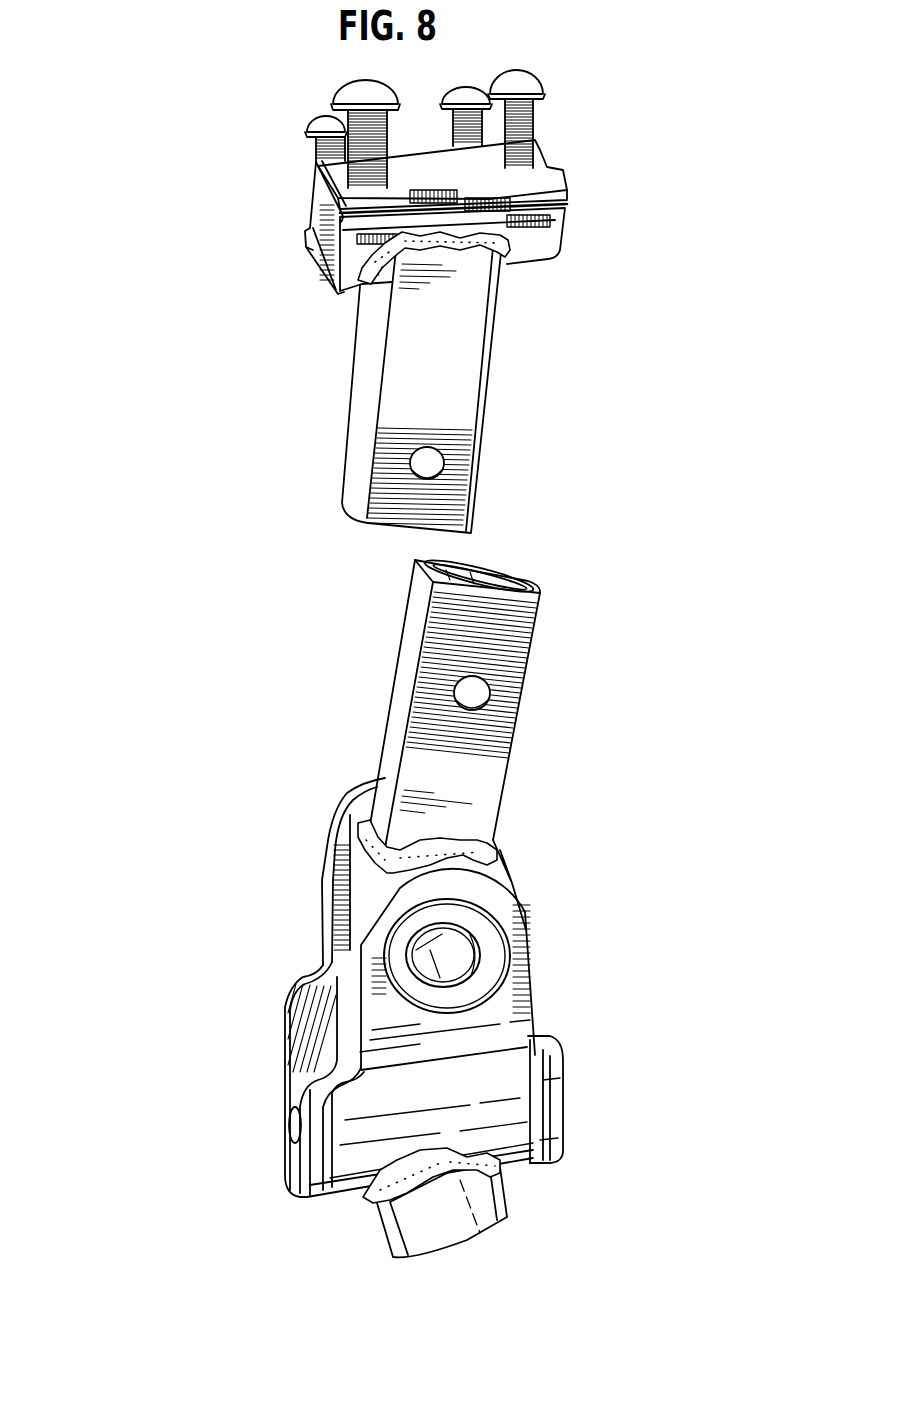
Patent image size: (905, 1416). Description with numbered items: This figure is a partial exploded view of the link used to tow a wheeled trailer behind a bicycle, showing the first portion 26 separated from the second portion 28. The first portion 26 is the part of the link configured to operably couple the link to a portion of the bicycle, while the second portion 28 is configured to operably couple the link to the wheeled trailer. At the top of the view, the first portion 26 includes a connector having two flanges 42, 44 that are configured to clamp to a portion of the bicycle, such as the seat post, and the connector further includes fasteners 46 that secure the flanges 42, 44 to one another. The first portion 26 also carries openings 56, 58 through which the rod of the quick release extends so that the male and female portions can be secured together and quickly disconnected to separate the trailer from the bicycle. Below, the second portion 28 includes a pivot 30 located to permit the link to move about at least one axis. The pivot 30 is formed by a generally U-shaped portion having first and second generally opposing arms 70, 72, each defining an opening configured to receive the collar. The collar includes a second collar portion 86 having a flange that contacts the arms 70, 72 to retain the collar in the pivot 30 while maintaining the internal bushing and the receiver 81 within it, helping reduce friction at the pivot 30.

The first portion 26 is at (179, 352).
The second portion 28 is at (230, 1157).
The pivot 30 is at (220, 992).
The flange 42 is at (323, 268).
The flange 44 is at (312, 202).
The fasteners 46 is at (308, 121).
The opening 56 is at (462, 693).
The opening 58 is at (413, 467).
The first arm 70 is at (515, 1000).
The second arm 72 is at (322, 933).
The receiver 81 is at (355, 883).
The second collar portion 86 is at (480, 947).